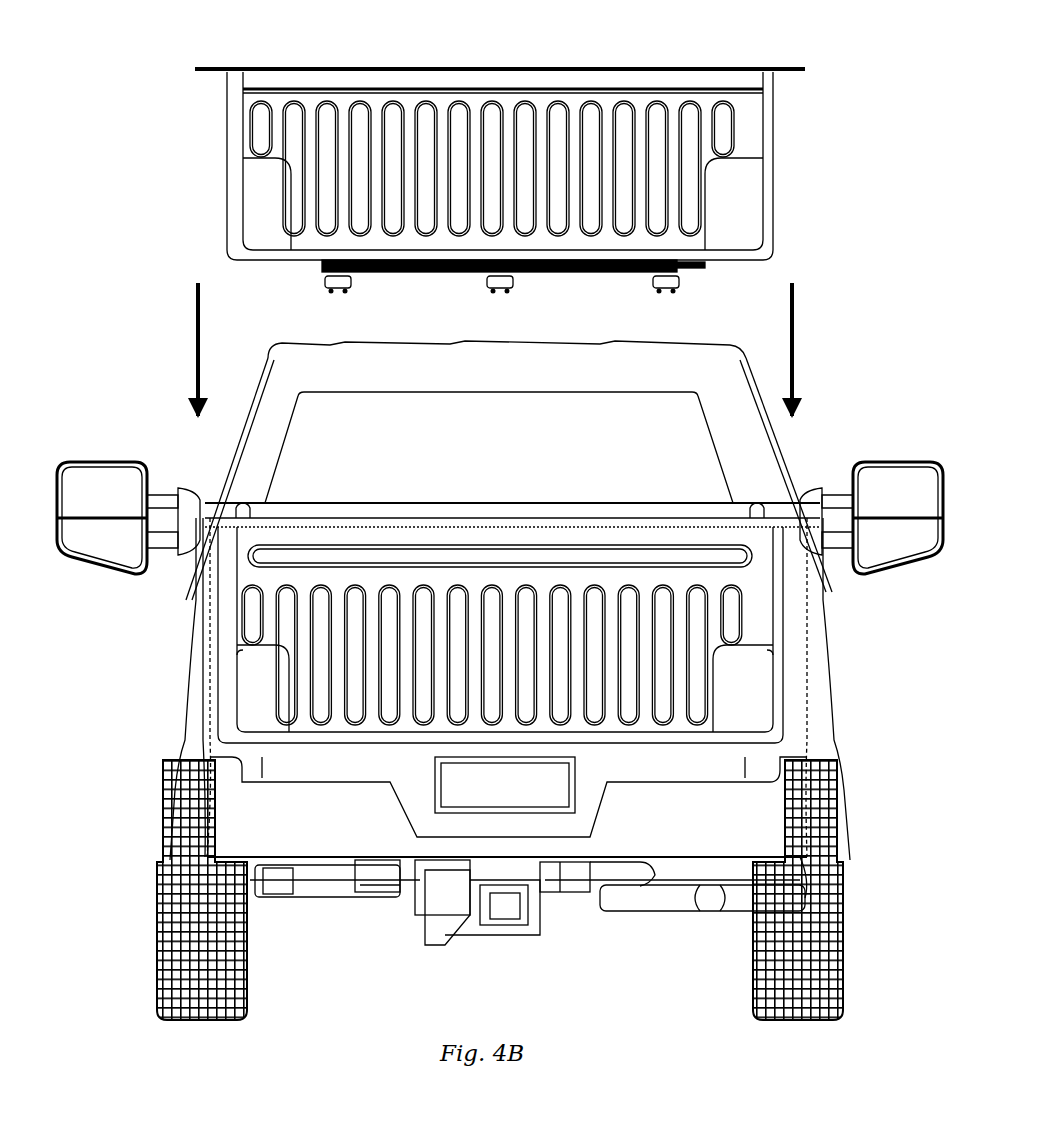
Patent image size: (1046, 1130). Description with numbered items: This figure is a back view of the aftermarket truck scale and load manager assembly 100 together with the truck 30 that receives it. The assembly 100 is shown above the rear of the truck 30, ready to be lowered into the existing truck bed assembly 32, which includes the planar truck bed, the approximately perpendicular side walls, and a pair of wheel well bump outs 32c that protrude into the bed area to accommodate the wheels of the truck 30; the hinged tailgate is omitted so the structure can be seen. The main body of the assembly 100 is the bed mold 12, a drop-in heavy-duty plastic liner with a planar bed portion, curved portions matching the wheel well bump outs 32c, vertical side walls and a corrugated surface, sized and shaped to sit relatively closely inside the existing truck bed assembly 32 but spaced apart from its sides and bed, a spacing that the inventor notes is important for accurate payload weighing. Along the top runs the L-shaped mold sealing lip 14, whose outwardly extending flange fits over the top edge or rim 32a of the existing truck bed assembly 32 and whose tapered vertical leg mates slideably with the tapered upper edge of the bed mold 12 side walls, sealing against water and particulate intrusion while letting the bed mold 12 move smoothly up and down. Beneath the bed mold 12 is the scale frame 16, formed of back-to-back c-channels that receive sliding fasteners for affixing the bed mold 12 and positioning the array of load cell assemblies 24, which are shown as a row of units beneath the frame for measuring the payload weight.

The aftermarket truck scale and load manager assembly 100 is at (527, 170).
The mold sealing lip 14 is at (408, 68).
The bed mold 12 is at (773, 155).
The scale frame 16 is at (697, 284).
The load cell assemblies 24 is at (478, 290).
The truck 30 is at (828, 455).
The existing truck bed assembly 32 is at (514, 641).
The rim 32a is at (216, 520).
The wheel well bump outs 32c is at (770, 540).